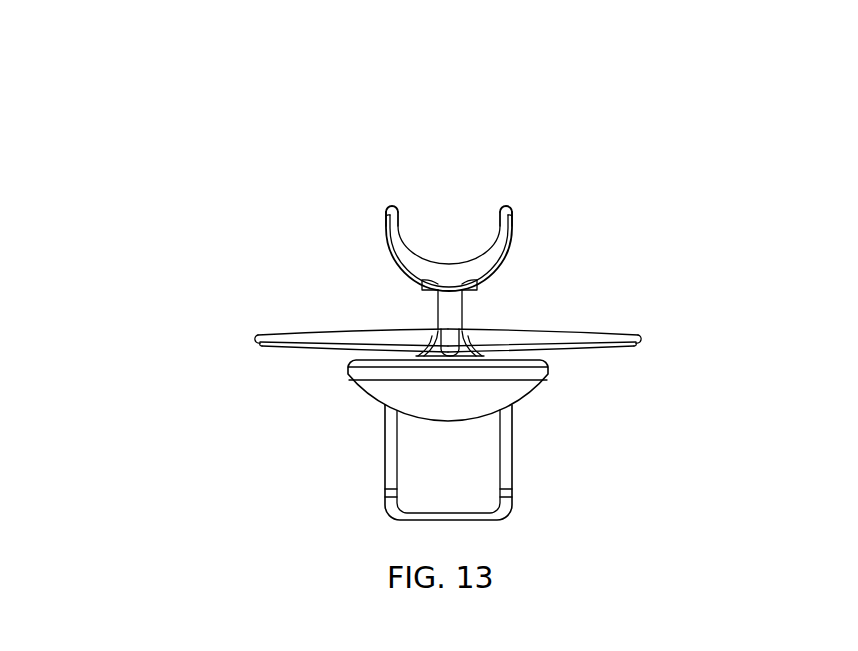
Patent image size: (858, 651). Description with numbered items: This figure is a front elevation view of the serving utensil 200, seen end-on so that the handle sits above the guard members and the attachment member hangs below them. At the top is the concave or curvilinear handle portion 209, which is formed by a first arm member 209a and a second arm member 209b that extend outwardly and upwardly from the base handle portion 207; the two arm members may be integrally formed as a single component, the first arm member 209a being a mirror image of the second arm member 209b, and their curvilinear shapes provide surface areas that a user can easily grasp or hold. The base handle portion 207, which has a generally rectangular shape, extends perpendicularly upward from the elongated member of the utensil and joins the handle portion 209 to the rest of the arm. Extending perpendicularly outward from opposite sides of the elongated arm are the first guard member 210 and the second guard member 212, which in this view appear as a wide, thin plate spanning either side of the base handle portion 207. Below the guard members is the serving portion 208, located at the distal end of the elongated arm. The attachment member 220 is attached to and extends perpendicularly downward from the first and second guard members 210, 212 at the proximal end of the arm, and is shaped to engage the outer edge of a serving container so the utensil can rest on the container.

The serving utensil 200 is at (684, 208).
The base handle portion 207 is at (449, 313).
The serving portion 208 is at (517, 387).
The handle portion 209 is at (441, 183).
The first arm member 209a is at (400, 245).
The second arm member 209b is at (506, 210).
The first guard member 210 is at (263, 337).
The second guard member 212 is at (624, 331).
The attachment member 220 is at (480, 490).